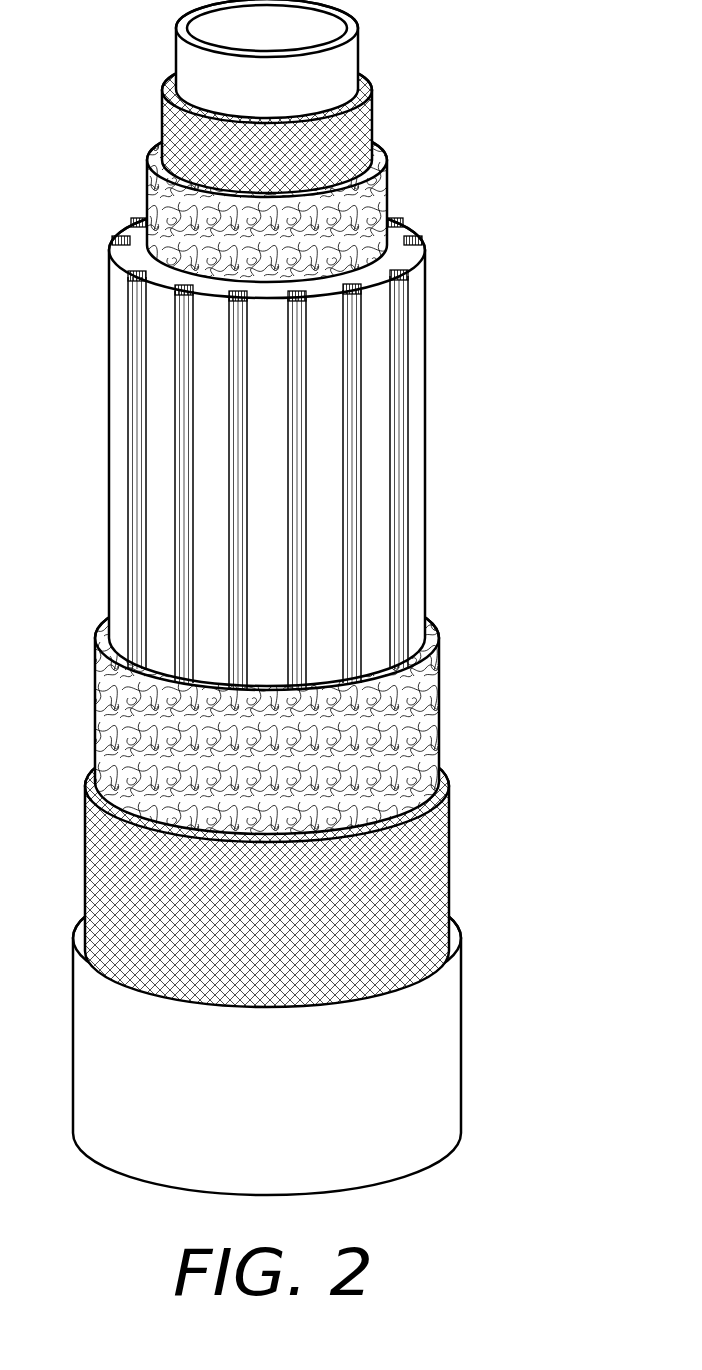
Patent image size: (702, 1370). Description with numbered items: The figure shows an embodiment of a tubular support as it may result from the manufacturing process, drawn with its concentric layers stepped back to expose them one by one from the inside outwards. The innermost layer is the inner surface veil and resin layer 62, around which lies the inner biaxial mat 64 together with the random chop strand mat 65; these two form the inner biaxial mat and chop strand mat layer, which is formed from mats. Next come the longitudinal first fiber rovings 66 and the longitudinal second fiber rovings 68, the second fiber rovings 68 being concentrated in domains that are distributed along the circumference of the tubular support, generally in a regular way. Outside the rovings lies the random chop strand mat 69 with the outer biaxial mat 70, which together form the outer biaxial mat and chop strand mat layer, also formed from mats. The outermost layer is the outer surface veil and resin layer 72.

The inner surface veil and resin layer 62 is at (355, 50).
The inner biaxial mat 64 is at (367, 118).
The random chop strand mat 65 is at (383, 193).
The longitudinal first fiber rovings 66 is at (378, 343).
The longitudinal second fiber rovings 68 is at (348, 477).
The random chop strand mat 69 is at (428, 715).
The outer biaxial mat 70 is at (433, 862).
The outer surface veil and resin layer 72 is at (445, 1033).